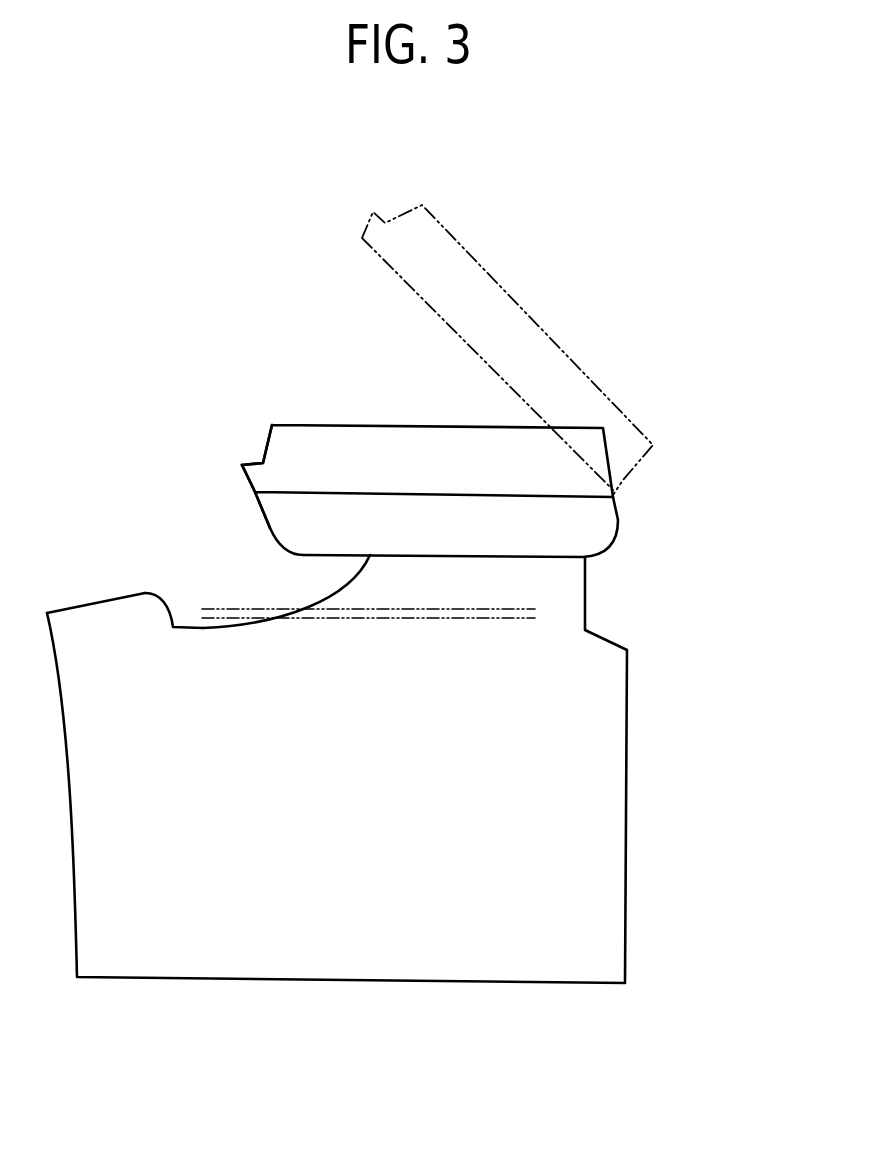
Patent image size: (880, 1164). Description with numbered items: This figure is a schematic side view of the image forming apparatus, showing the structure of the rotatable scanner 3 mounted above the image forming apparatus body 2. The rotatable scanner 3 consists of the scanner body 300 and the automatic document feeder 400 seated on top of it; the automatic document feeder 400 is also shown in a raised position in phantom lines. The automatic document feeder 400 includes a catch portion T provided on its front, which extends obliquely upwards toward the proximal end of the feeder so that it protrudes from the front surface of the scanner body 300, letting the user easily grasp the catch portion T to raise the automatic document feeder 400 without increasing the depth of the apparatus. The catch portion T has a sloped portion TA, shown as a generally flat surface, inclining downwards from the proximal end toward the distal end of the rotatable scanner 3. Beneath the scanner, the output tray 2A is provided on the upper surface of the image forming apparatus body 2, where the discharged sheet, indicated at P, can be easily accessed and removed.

The image forming apparatus body 2 is at (613, 808).
The output tray 2A is at (198, 607).
The rotatable scanner 3 is at (499, 381).
The scanner body 300 is at (593, 528).
The automatic document feeder 400 is at (580, 462).
The catch portion T is at (260, 455).
The sloped portion TA is at (242, 475).
The recording medium path P is at (493, 612).